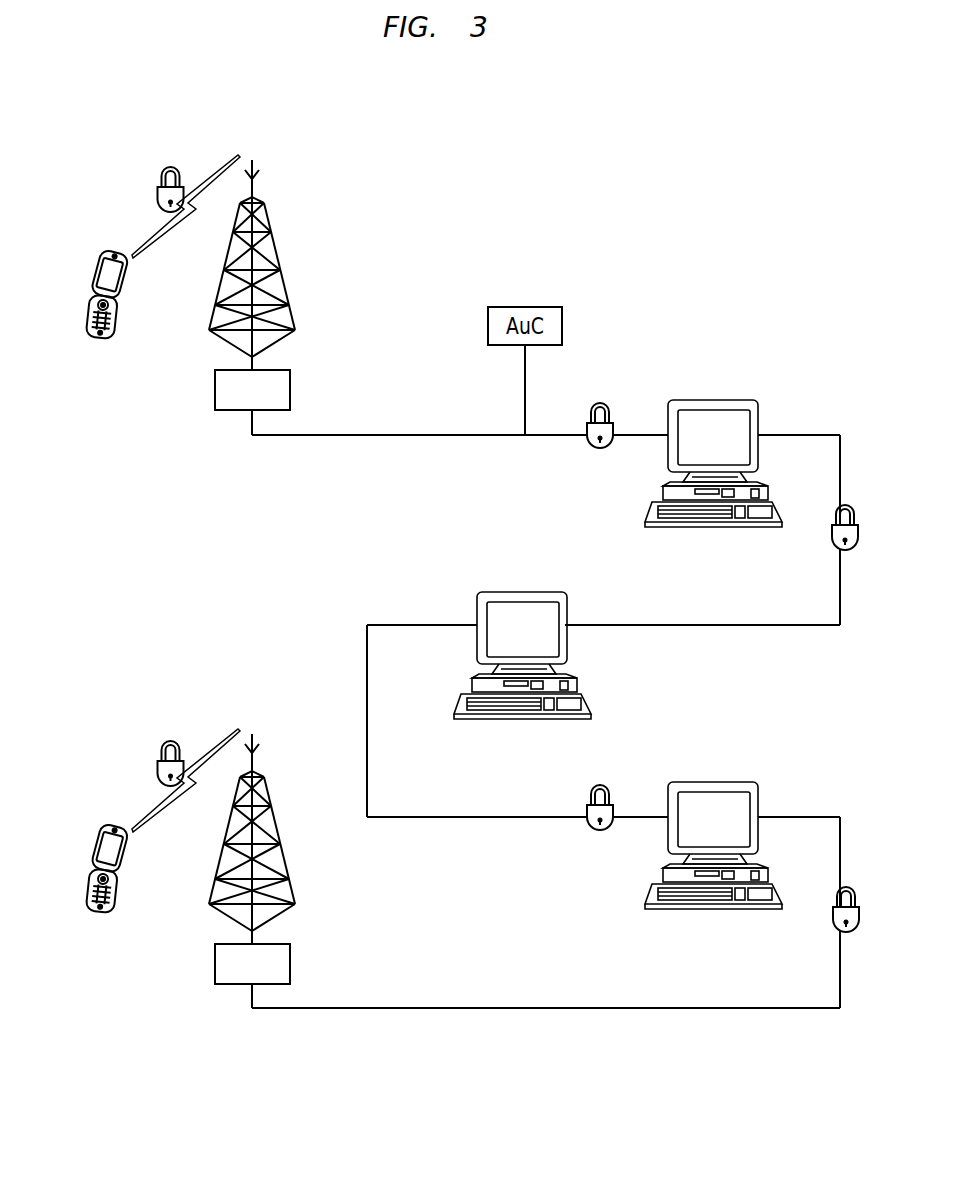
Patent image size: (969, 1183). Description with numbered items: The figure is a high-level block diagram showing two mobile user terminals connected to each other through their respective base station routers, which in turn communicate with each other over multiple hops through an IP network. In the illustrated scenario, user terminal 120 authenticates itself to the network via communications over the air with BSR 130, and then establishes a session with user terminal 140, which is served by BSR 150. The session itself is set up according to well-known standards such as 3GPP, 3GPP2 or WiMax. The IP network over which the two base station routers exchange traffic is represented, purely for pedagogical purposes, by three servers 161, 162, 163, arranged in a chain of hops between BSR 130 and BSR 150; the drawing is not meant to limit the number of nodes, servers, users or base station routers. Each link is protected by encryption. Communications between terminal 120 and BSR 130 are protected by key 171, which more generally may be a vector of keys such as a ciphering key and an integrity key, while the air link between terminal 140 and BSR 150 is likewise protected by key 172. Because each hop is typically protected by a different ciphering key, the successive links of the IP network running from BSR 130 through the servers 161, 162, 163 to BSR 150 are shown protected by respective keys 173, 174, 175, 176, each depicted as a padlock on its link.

The user terminal 120 is at (93, 348).
The BSR 130 is at (216, 406).
The user terminal 140 is at (93, 918).
The BSR 150 is at (216, 978).
The server 161 is at (758, 408).
The server 162 is at (566, 600).
The server 163 is at (759, 790).
The key 171 is at (175, 164).
The key 172 is at (175, 738).
The key 173 is at (605, 400).
The key 174 is at (848, 501).
The key 175 is at (605, 782).
The key 176 is at (849, 885).